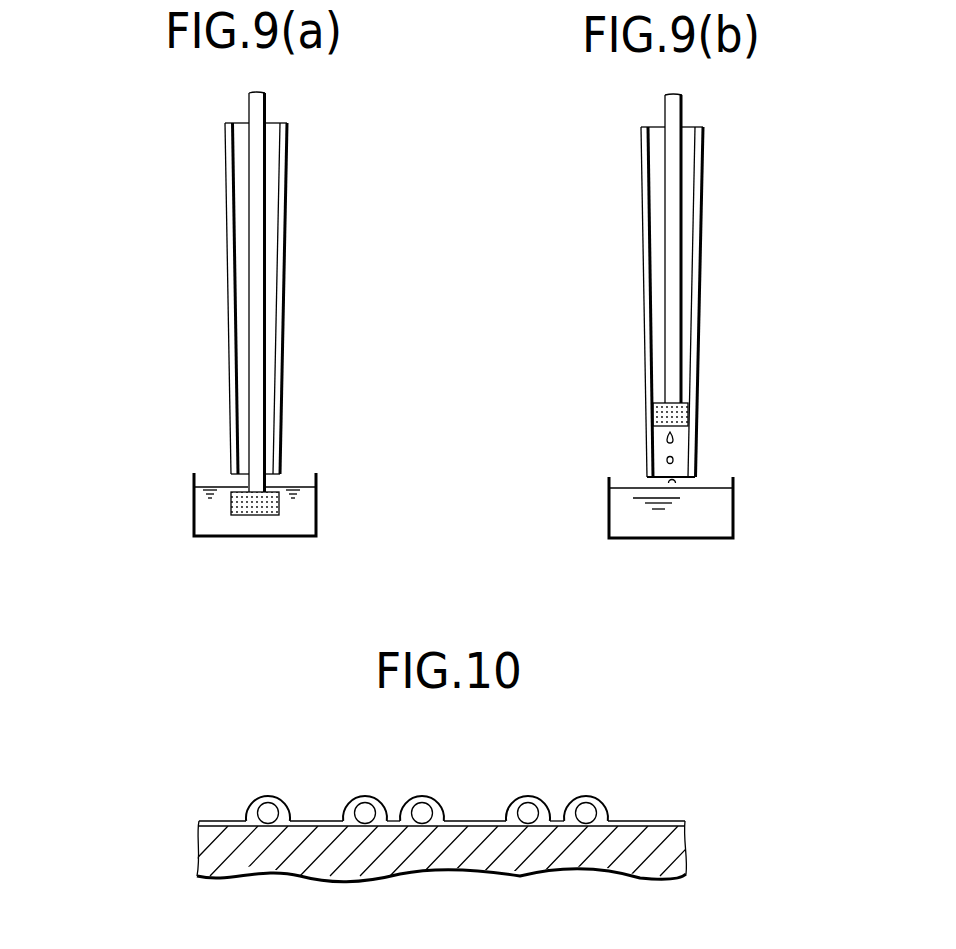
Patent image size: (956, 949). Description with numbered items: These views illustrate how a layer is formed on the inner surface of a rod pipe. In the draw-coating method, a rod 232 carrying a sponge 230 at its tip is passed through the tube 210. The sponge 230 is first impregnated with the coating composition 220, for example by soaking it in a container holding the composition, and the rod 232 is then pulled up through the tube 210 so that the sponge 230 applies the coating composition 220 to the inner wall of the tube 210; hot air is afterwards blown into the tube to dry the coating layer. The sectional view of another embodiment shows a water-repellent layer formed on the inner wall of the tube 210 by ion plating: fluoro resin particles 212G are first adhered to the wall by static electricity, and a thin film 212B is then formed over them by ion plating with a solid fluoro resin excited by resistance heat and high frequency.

The tube 210 is at (283, 322).
In FIG. 9b, the tube 210 is at (695, 325).
In FIG. 10, the tube 210 is at (582, 866).
The rod 232 is at (264, 205).
In FIG. 9b, the rod 232 is at (682, 205).
The sponge 230 is at (280, 509).
In FIG. 9b, the sponge 230 is at (688, 410).
The coating composition 220 is at (205, 518).
In FIG. 9b, the coating composition 220 is at (722, 523).
In FIG. 10, the fluoro resin particles 212G is at (423, 807).
In FIG. 10, the thin film 212B is at (485, 824).